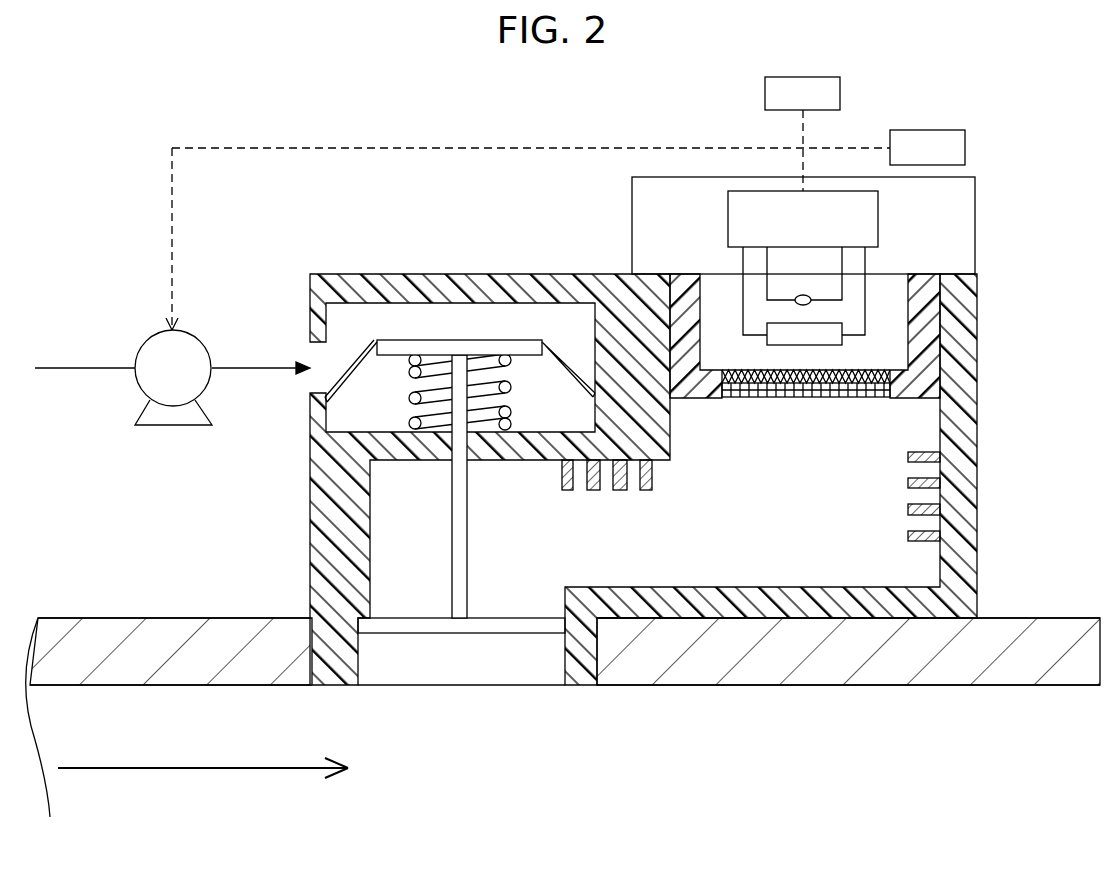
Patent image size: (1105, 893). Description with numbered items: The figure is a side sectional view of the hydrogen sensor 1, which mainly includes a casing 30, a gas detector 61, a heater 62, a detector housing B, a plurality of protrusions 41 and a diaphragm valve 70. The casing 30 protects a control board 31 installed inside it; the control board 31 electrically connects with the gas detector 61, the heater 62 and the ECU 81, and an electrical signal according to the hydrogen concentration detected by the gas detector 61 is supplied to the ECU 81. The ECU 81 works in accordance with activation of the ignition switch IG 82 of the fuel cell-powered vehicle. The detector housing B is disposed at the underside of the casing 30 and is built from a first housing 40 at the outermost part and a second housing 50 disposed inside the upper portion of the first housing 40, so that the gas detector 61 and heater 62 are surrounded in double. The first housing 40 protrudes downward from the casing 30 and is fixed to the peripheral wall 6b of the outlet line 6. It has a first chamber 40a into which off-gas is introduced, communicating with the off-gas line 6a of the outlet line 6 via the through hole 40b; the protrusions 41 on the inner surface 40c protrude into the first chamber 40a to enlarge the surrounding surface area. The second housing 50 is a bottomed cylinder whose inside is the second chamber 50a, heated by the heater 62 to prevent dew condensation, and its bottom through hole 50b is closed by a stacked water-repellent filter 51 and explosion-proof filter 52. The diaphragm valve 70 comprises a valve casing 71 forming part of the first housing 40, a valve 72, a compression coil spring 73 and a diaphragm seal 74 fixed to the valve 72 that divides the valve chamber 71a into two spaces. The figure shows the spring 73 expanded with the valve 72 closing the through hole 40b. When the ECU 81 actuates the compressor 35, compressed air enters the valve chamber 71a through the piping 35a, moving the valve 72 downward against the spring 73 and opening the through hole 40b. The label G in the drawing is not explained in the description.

The hydrogen sensor 1 is at (1035, 186).
The outlet line 6 is at (1072, 617).
The off-gas line 6a is at (432, 786).
The peripheral wall 6b is at (113, 630).
The casing 30 is at (632, 220).
The control board 31 is at (878, 218).
The compressor 35 is at (183, 333).
The piping 35a is at (245, 366).
The first housing 40 is at (991, 483).
The first chamber 40a is at (728, 545).
The through hole 40b is at (483, 670).
The inner surface 40c is at (505, 462).
The protrusions 41 is at (652, 501).
The second housing 50 is at (943, 327).
The second chamber 50a is at (718, 282).
The through hole 50b is at (732, 400).
The water-repellent filter 51 is at (860, 390).
The explosion-proof filter 52 is at (800, 390).
The gas detector 61 is at (812, 297).
The heater 62 is at (825, 330).
The diaphragm valve 70 is at (282, 441).
The valve casing 71 is at (313, 555).
The valve chamber 71a is at (490, 331).
The valve 72 is at (465, 565).
The compression coil spring 73 is at (510, 388).
The diaphragm seal 74 is at (353, 357).
The ECU 81 is at (840, 90).
The IG 82 is at (965, 140).
The exhaust gas G is at (934, 77).
The detector housing B is at (1007, 421).